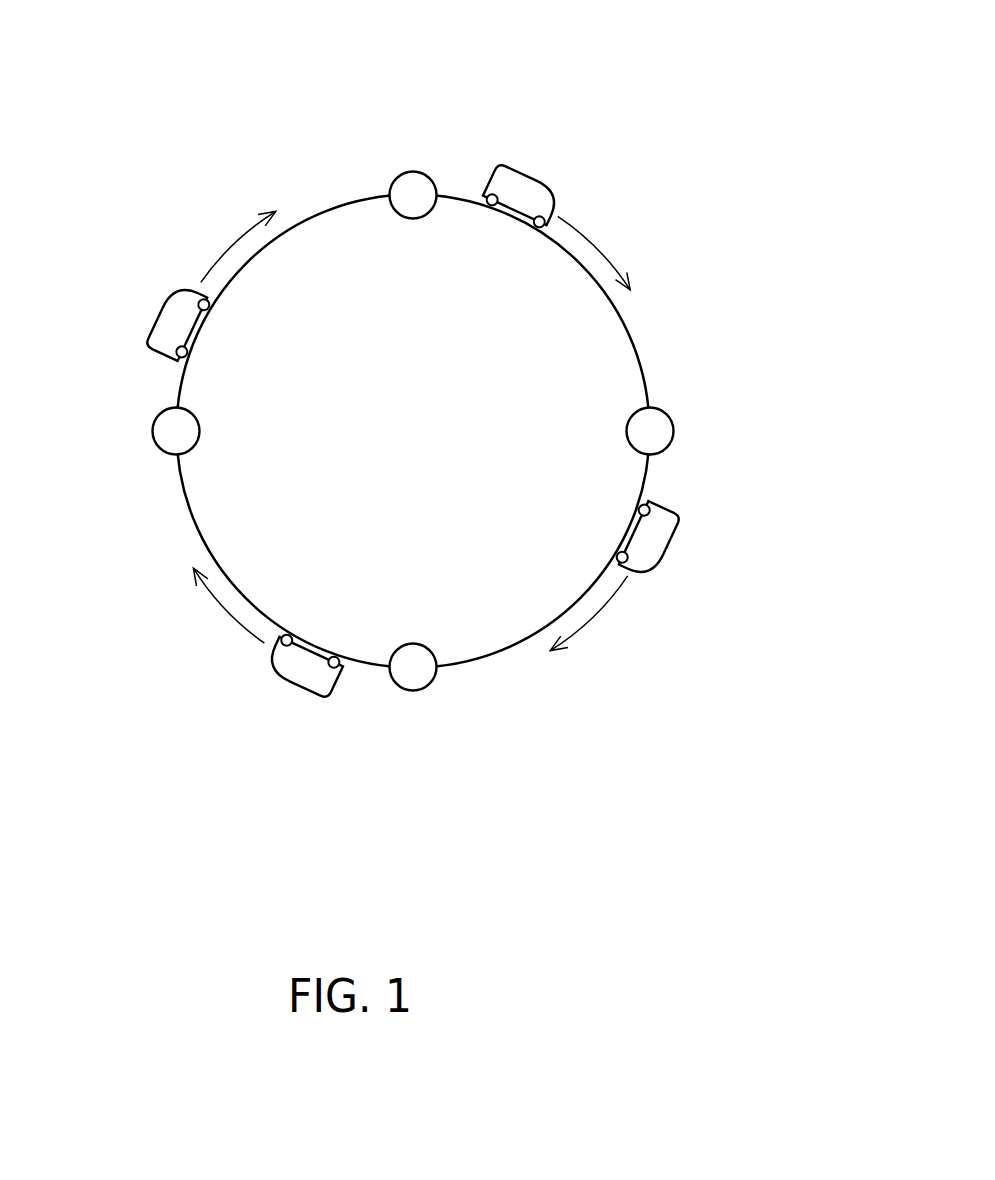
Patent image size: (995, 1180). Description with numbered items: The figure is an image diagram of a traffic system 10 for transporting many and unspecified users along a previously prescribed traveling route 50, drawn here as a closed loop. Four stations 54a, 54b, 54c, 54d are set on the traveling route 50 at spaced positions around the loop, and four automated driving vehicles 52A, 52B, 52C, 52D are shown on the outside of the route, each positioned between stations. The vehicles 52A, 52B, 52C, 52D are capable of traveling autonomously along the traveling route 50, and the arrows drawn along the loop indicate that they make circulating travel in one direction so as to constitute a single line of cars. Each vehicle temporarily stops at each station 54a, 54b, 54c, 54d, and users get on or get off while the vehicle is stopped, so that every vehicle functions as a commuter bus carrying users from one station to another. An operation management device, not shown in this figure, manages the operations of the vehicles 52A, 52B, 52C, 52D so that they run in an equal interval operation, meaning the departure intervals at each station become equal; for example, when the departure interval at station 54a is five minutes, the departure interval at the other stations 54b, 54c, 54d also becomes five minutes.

The traffic system 10 is at (600, 103).
The traveling route 50 is at (341, 203).
The automated driving vehicle 52A is at (153, 310).
The automated driving vehicle 52B is at (536, 172).
The automated driving vehicle 52C is at (680, 543).
The automated driving vehicle 52D is at (280, 688).
The station 54a is at (157, 418).
The station 54b is at (430, 177).
The station 54c is at (674, 430).
The station 54d is at (397, 687).